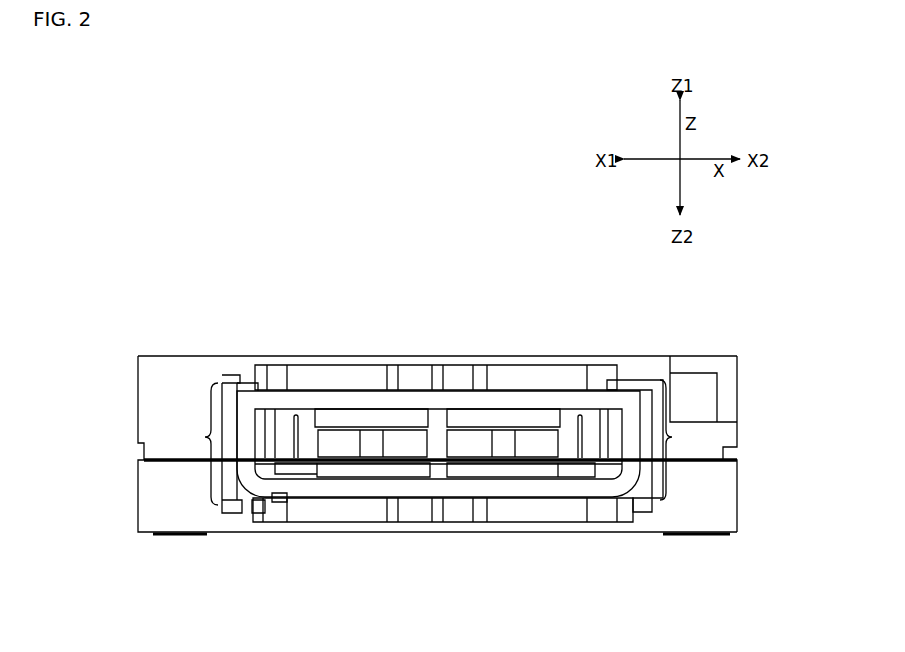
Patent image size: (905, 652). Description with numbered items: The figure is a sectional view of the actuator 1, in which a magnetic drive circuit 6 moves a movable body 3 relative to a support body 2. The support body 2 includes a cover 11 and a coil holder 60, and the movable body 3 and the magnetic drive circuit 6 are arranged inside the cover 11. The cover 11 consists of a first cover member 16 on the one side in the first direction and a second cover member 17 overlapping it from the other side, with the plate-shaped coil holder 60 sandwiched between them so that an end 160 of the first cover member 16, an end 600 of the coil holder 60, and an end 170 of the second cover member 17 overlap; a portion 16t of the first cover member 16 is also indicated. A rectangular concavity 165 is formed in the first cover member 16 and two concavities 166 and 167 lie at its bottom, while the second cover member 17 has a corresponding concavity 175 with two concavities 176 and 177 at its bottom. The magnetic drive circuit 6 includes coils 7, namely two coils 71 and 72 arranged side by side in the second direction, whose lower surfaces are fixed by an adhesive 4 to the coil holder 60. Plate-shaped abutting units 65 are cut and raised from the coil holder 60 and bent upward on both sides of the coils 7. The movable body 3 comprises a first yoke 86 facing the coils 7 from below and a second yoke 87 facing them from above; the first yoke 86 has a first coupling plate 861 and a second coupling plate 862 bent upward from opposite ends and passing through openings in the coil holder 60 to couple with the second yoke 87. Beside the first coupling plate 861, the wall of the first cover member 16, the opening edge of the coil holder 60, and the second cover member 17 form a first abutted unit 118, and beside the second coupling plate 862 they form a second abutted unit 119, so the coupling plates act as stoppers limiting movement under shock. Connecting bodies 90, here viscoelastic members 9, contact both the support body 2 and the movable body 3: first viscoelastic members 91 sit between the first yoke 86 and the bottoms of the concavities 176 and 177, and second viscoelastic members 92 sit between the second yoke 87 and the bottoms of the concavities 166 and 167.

The actuator 1 is at (449, 432).
The support body 2 is at (716, 344).
The movable body 3 is at (226, 384).
The adhesive 4 is at (466, 462).
The magnetic drive circuit 6 is at (524, 418).
The coil 7 is at (458, 525).
The coil 71 is at (272, 468).
The coil 72 is at (638, 483).
The viscoelastic member 9 is at (442, 441).
The connecting body 90 is at (436, 327).
The first viscoelastic member 91 is at (345, 520).
The second viscoelastic member 92 is at (338, 372).
The cover 11 is at (449, 448).
The first cover member 16 is at (432, 448).
The housing tab 16t is at (245, 375).
The second cover member 17 is at (756, 468).
The coil holder 60 is at (546, 468).
The abutting unit 65 is at (302, 408).
The first yoke 86 is at (418, 490).
The second yoke 87 is at (456, 414).
The first abutted unit 118 is at (220, 406).
The second abutted unit 119 is at (698, 428).
The end of first cover member 160 is at (148, 403).
The concavity 165 is at (605, 370).
The concavity 166 is at (382, 367).
The concavity 167 is at (510, 368).
The end of second cover member 170 is at (150, 507).
The concavity 175 is at (617, 497).
The concavity 176 is at (333, 512).
The concavity 177 is at (563, 517).
The end of coil holder 600 is at (163, 461).
The first coupling plate 861 is at (456, 414).
The second coupling plate 862 is at (657, 382).